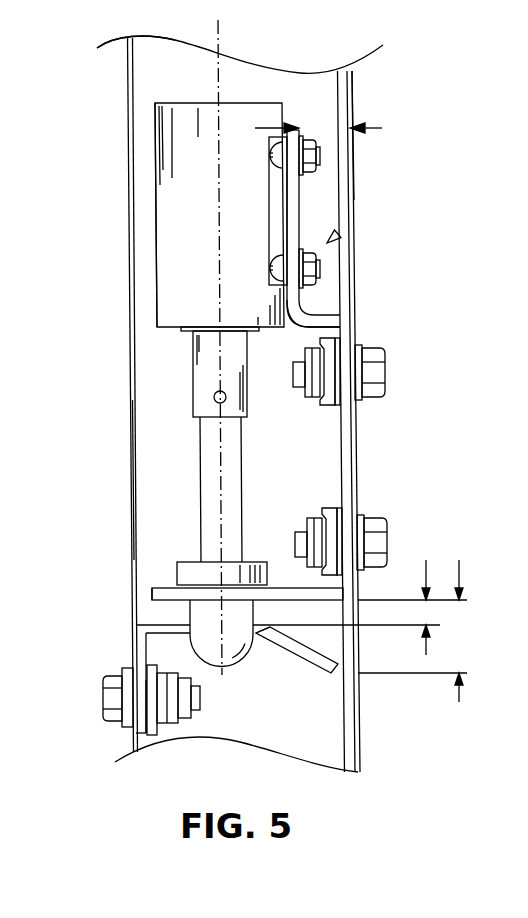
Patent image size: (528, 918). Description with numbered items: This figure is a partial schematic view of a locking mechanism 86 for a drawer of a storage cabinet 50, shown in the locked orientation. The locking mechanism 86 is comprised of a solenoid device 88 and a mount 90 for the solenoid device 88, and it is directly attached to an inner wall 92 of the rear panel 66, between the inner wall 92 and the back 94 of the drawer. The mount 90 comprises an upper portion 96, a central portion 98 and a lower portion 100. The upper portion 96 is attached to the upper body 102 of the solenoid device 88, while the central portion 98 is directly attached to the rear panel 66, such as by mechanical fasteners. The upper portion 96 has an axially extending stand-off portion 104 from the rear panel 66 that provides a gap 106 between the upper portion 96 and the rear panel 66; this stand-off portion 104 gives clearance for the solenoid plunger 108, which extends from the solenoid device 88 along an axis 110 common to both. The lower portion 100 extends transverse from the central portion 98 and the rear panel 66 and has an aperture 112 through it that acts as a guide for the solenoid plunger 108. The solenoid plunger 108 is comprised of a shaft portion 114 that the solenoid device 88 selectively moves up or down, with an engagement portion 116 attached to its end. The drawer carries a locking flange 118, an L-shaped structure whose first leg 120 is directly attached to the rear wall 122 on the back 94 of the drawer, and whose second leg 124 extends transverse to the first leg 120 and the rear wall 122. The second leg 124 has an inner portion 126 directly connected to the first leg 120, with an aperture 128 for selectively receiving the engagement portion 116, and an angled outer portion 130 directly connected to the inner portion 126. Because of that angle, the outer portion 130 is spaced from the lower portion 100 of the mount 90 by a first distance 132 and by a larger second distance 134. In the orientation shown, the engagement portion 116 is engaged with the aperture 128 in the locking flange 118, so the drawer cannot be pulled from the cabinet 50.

The cabinet 50 is at (352, 84).
The rear panel 66 is at (352, 109).
The locking mechanism 86 is at (112, 95).
The solenoid device 88 is at (255, 112).
The mount 90 is at (333, 237).
The inner wall 92 is at (343, 273).
The back 94 is at (130, 398).
The upper portion 96 is at (300, 187).
The central portion 98 is at (352, 457).
The lower portion 100 is at (343, 601).
The upper body 102 is at (156, 200).
The stand-off portion 104 is at (322, 313).
The gap 106 is at (375, 129).
The solenoid plunger 108 is at (200, 468).
The axis 110 is at (223, 677).
The aperture 112 is at (253, 593).
The shaft portion 114 is at (212, 435).
The engagement portion 116 is at (190, 608).
The locking flange 118 is at (133, 659).
The first leg 120 is at (137, 734).
The rear wall 122 is at (136, 505).
The second leg 124 is at (143, 630).
The inner portion 126 is at (180, 637).
The aperture 128 is at (257, 633).
The outer portion 130 is at (328, 653).
The first distance 132 is at (425, 596).
The second distance 134 is at (472, 620).